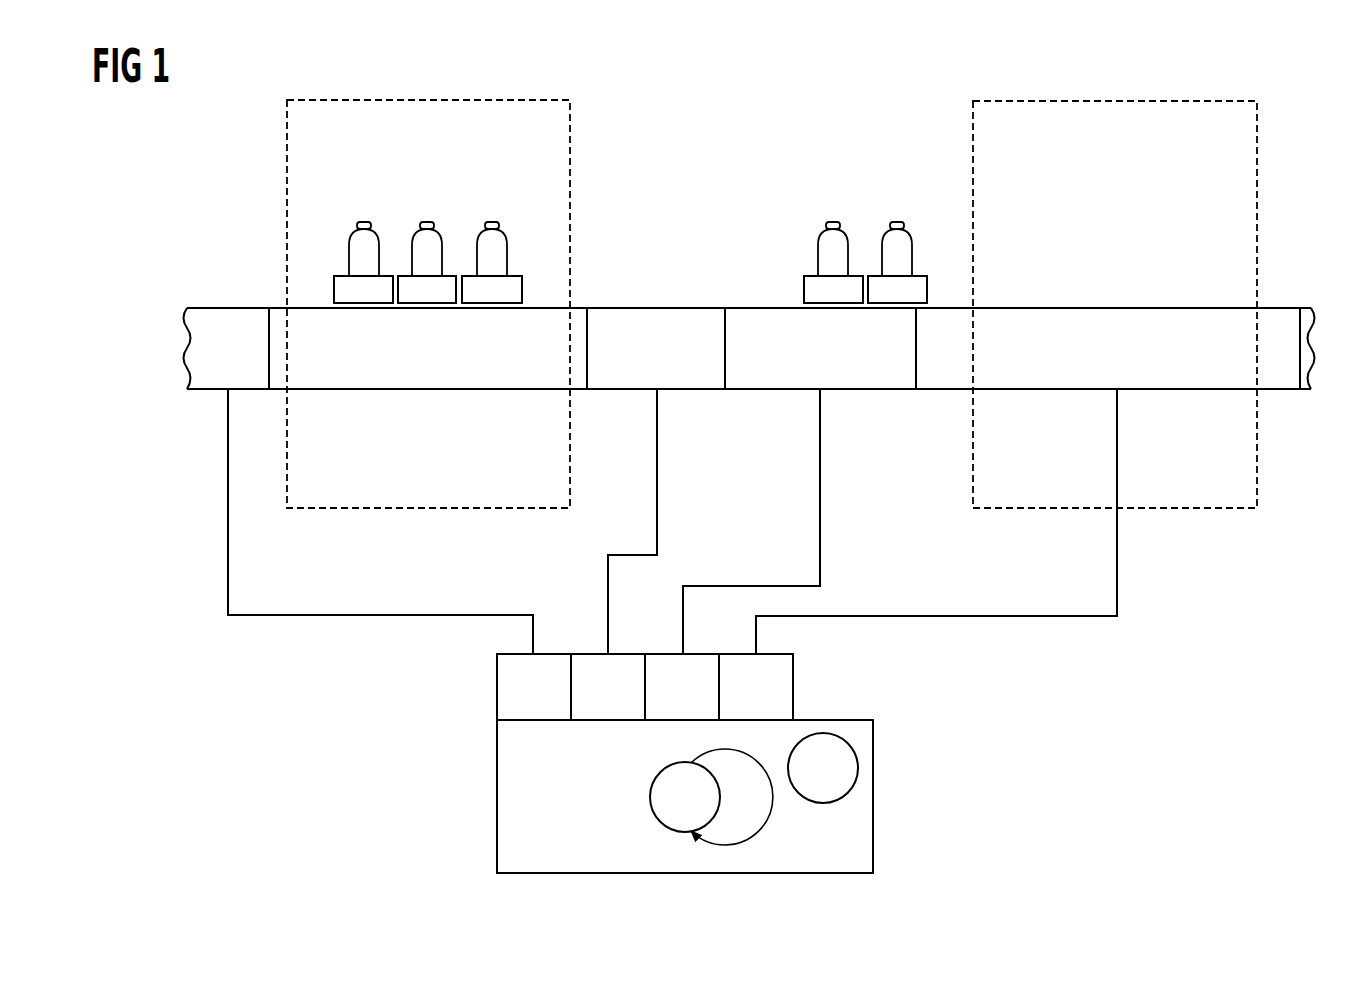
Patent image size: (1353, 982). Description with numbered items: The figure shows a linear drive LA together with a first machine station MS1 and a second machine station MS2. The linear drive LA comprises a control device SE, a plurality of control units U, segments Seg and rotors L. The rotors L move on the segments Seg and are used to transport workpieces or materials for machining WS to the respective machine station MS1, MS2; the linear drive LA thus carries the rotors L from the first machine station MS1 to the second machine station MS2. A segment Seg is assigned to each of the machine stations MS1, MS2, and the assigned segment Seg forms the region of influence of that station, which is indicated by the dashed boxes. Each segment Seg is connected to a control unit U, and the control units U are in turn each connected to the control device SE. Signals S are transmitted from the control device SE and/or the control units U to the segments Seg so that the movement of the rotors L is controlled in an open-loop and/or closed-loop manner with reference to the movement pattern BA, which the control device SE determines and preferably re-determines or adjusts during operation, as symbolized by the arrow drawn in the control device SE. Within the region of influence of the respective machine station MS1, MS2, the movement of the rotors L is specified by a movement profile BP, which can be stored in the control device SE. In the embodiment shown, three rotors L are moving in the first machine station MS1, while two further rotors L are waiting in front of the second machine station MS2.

The linear drive LA is at (775, 106).
The segment Seg is at (249, 367).
The rotor L is at (801, 288).
The workpiece or material for machining WS is at (844, 221).
The first machine station MS1 is at (287, 157).
The second machine station MS2 is at (1257, 158).
The signal S is at (822, 532).
The control device SE is at (640, 763).
The control unit U is at (542, 705).
The movement pattern BA is at (701, 812).
The movement profile BP is at (838, 783).